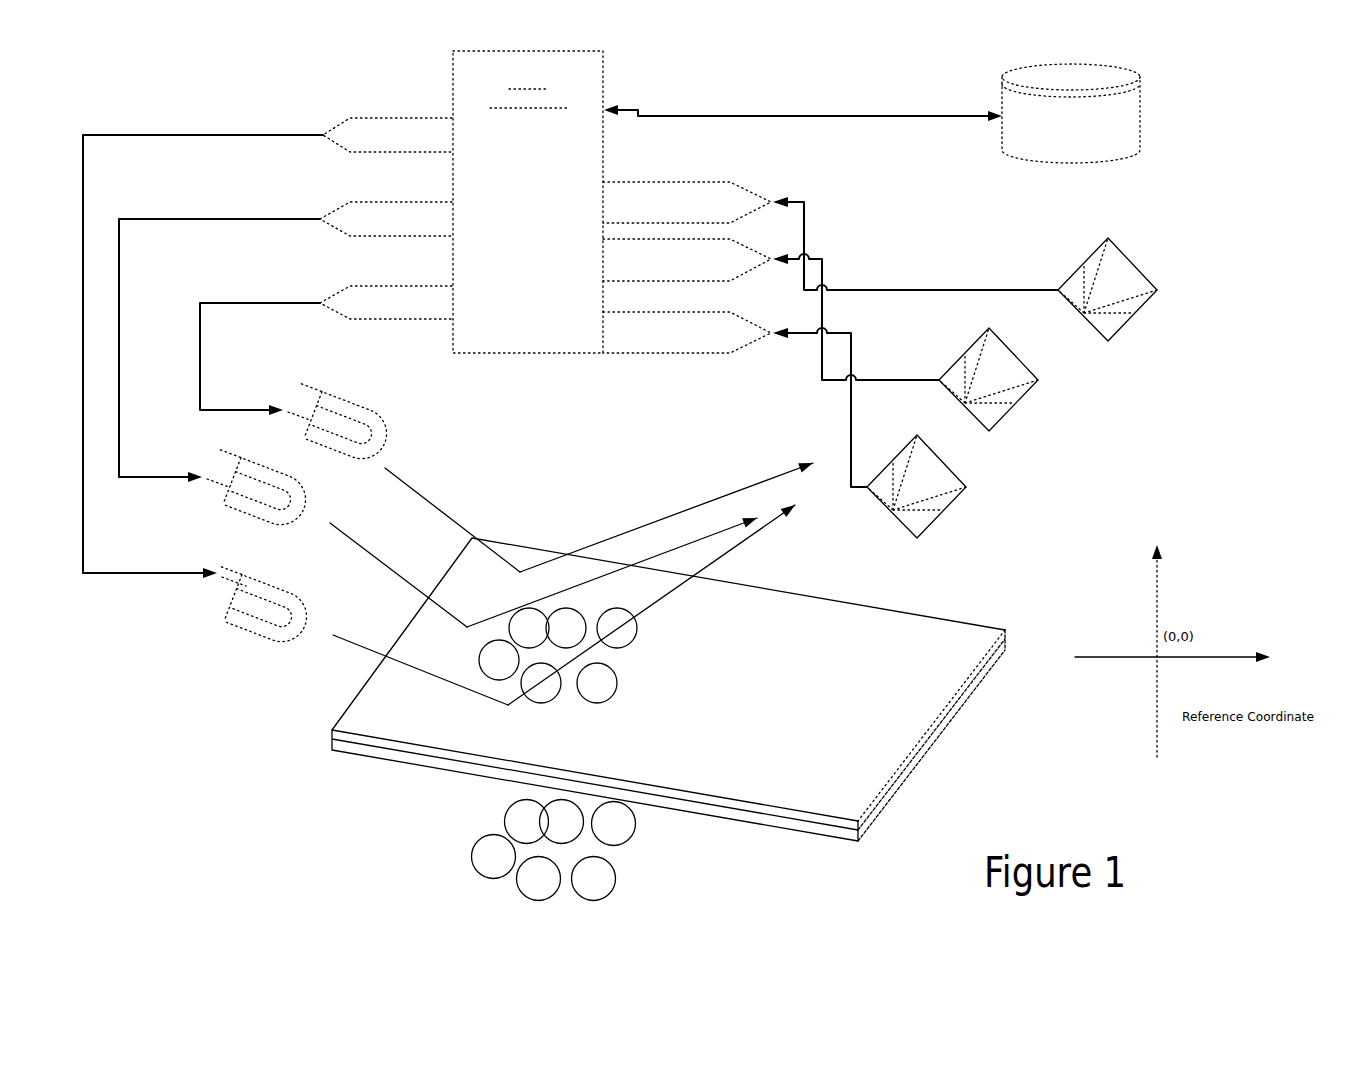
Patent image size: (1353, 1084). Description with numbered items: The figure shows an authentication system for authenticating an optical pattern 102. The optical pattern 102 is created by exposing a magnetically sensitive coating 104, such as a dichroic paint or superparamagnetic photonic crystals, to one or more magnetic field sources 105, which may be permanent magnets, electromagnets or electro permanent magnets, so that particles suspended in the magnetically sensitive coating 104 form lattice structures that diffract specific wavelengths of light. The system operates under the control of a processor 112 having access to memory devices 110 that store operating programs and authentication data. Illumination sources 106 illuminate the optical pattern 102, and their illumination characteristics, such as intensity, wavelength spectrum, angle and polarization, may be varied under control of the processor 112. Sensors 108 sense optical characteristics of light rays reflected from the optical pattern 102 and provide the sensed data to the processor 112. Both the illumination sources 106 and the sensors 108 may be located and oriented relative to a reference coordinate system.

The optical pattern 102 is at (647, 648).
The magnetically sensitive coating 104 is at (827, 720).
The magnetic field sources 105 is at (635, 860).
The illumination sources 106 is at (377, 442).
The sensors 108 is at (1130, 310).
The memory devices 110 is at (1123, 113).
The processor 112 is at (563, 335).